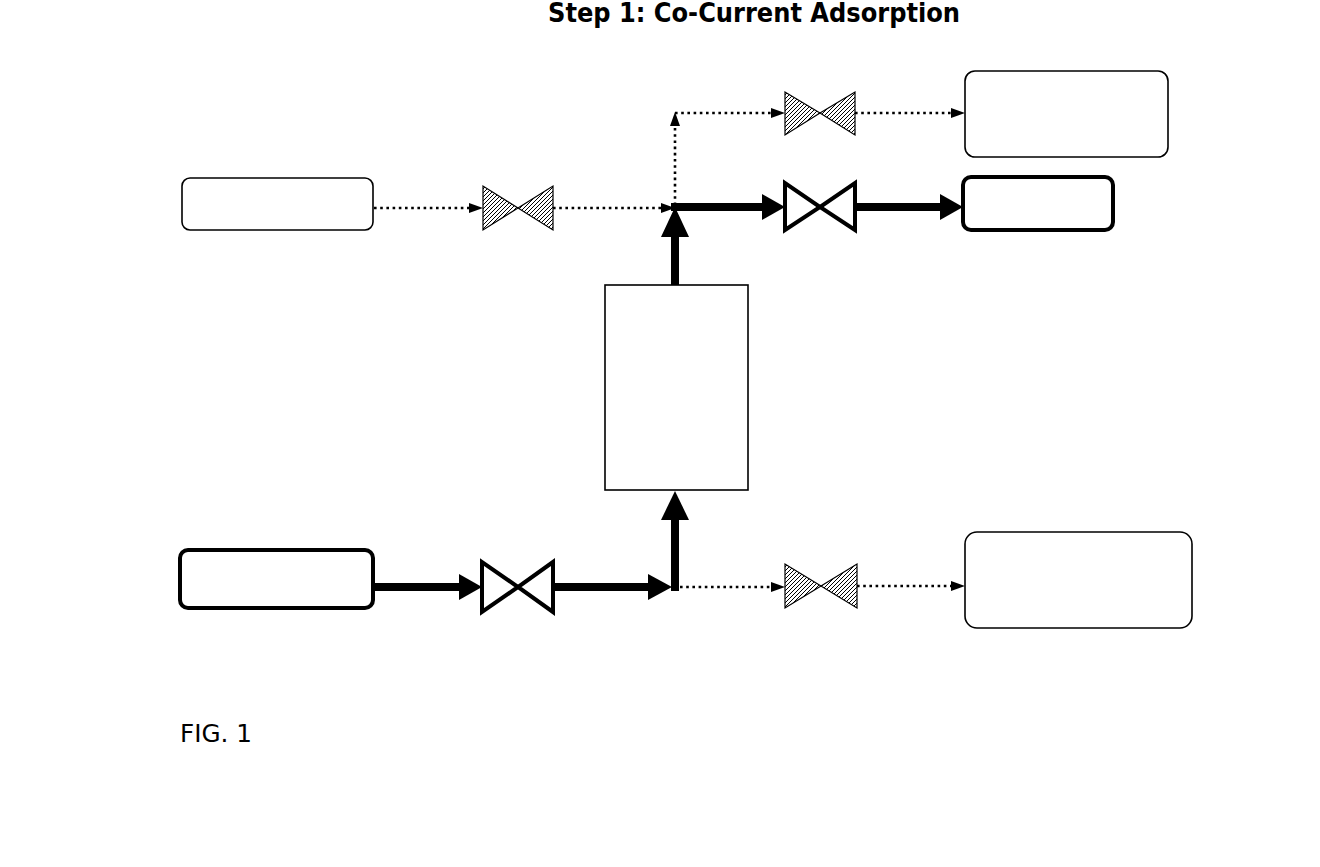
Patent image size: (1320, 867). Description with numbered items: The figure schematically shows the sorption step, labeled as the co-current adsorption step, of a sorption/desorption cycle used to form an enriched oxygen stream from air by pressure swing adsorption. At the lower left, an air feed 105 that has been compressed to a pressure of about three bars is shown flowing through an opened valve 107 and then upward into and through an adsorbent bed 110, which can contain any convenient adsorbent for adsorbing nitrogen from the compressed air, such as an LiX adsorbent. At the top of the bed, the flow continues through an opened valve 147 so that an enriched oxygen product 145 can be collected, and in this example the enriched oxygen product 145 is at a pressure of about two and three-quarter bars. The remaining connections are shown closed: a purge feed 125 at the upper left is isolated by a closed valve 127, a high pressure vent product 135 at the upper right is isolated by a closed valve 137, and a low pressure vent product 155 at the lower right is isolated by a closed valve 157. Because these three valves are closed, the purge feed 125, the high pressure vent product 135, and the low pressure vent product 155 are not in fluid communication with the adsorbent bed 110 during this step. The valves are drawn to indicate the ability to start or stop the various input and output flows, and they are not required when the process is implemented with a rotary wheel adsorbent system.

The air feed 105 is at (276, 585).
The valve 107 is at (517, 609).
The adsorbent bed 110 is at (706, 387).
The purge feed 125 is at (277, 185).
The valve 127 is at (518, 189).
The high pressure vent product 135 is at (1096, 114).
The valve 137 is at (820, 94).
The enriched oxygen product 145 is at (1064, 223).
The valve 147 is at (820, 226).
The low pressure vent product 155 is at (1106, 580).
The valve 157 is at (821, 609).